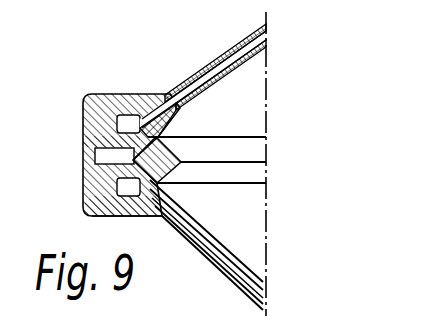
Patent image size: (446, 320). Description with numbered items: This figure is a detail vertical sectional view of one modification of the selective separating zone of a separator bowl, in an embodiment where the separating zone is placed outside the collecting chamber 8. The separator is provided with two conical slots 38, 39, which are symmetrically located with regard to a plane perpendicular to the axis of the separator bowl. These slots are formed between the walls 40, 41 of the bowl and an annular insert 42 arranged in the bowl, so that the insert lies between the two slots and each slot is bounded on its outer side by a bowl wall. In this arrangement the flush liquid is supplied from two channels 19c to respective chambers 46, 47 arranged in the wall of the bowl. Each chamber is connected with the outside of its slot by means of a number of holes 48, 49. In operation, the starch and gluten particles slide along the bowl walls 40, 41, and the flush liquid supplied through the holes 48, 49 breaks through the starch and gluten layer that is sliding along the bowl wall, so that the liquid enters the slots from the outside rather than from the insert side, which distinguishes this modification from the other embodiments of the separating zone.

The collecting chamber 8 is at (242, 245).
The channels 19c is at (242, 44).
The conical slot 38 is at (99, 216).
The conical slot 39 is at (135, 110).
The wall of the bowl 40 is at (186, 230).
The wall of the bowl 41 is at (207, 69).
The annular insert 42 is at (158, 100).
The chamber 46 is at (117, 190).
The chamber 47 is at (105, 113).
The holes 48 is at (96, 160).
The holes 49 is at (112, 138).